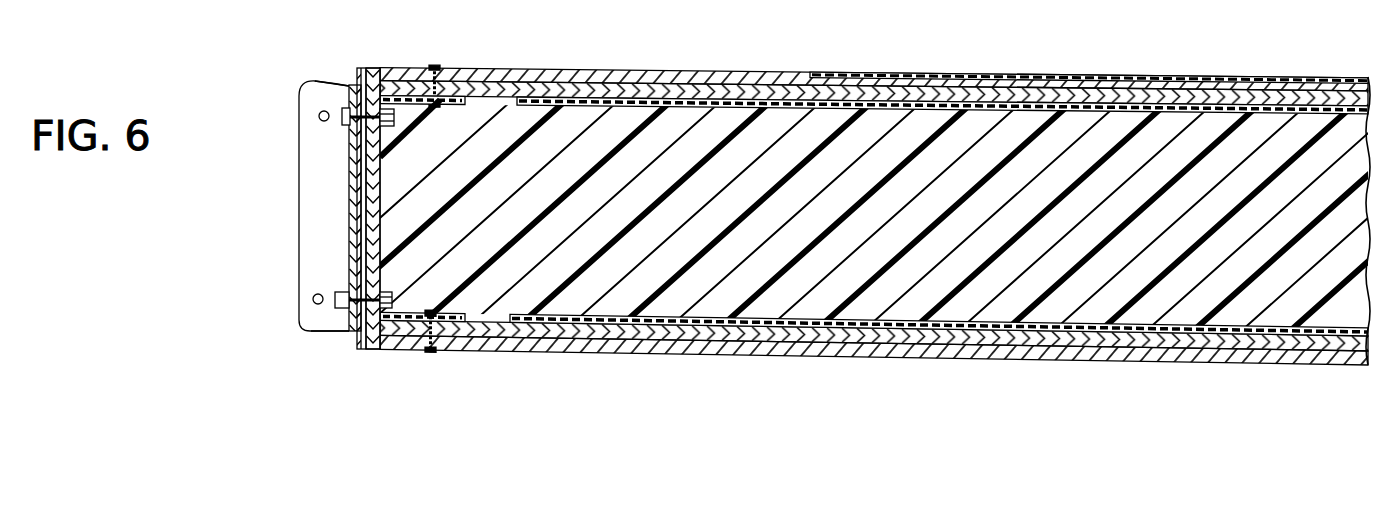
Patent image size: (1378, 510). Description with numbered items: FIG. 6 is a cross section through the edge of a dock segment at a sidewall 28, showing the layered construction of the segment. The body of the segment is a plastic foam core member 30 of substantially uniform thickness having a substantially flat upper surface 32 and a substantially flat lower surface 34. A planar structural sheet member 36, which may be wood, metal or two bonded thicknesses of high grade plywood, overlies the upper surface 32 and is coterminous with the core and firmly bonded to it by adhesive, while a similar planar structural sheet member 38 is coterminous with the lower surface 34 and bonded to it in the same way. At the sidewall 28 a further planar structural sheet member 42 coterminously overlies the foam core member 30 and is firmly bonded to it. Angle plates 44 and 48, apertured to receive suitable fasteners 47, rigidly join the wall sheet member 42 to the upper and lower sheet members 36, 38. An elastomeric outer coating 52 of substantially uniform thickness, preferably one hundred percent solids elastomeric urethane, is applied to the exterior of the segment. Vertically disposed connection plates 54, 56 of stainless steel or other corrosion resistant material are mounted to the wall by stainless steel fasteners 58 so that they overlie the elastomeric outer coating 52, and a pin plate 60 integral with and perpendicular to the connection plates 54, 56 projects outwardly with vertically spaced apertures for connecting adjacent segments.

The sidewall 28 is at (336, 220).
The plastic foam core member 30 is at (945, 292).
The upper surface 32 is at (878, 92).
The lower surface 34 is at (622, 322).
The planar structural sheet member 36 is at (663, 76).
The planar structural sheet member 38 is at (497, 340).
The planar structural sheet member 42 is at (345, 195).
The angle plate 44 is at (738, 98).
The fastener 47 is at (441, 64).
The angle plate 48 is at (378, 280).
The elastomeric outer coating 52 is at (1001, 68).
The connection plate 54 is at (315, 81).
The connection plate 56 is at (313, 331).
The fastener 58 is at (299, 137).
The pin plate 60 is at (313, 97).